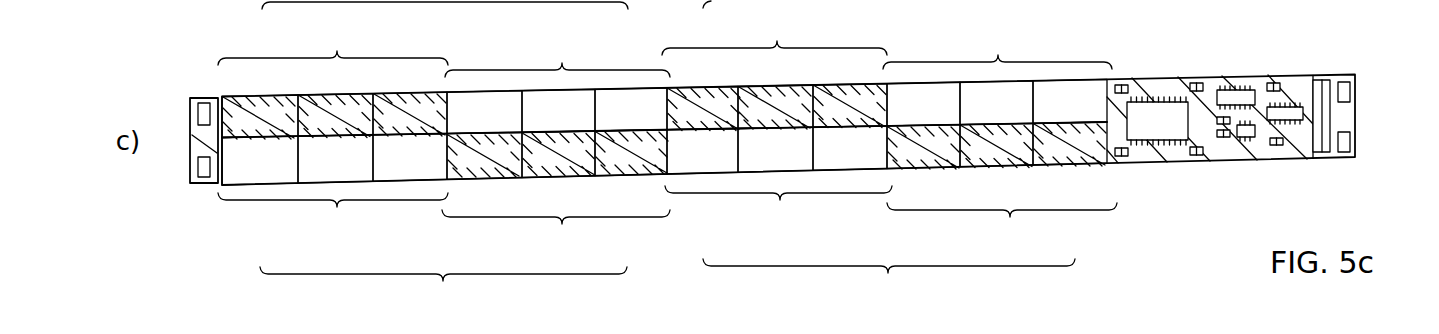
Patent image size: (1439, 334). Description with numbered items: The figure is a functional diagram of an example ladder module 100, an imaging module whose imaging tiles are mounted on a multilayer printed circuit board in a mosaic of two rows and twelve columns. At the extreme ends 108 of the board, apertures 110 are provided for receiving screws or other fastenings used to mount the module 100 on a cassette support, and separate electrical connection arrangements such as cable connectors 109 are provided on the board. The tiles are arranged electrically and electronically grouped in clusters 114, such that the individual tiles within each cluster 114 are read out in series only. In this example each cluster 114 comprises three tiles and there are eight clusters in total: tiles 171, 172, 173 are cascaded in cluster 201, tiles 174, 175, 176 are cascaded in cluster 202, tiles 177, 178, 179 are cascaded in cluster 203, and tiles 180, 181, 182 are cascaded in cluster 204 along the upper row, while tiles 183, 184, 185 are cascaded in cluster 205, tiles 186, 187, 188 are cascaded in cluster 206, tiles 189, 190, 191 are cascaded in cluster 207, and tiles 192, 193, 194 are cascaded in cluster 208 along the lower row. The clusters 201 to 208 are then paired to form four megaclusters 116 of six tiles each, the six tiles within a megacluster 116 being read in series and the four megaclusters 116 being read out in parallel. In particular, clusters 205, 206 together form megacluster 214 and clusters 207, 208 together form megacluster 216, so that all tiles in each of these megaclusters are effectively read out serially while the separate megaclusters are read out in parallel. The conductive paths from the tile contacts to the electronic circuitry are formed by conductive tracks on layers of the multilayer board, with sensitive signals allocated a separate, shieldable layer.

The ladder module 100 is at (1355, 120).
The extreme ends 108 is at (200, 136).
The cable connectors 109 is at (1313, 88).
The apertures 110 is at (197, 117).
The cluster 114 is at (300, 32).
The megacluster 116 is at (393, 303).
The tile 171 is at (260, 117).
The tile 172 is at (335, 116).
The tile 173 is at (410, 114).
The tile 174 is at (484, 112).
The tile 175 is at (558, 110).
The tile 176 is at (631, 109).
The tile 177 is at (703, 109).
The tile 178 is at (775, 107).
The tile 179 is at (850, 106).
The tile 180 is at (923, 104).
The tile 181 is at (996, 103).
The tile 182 is at (1070, 101).
The tile 183 is at (260, 160).
The tile 184 is at (335, 159).
The tile 185 is at (410, 158).
The tile 186 is at (484, 155).
The tile 187 is at (558, 154).
The tile 188 is at (631, 153).
The tile 189 is at (702, 152).
The tile 190 is at (775, 149).
The tile 191 is at (850, 148).
The tile 192 is at (923, 147).
The tile 193 is at (996, 145).
The tile 194 is at (1070, 144).
The cluster 201 is at (333, 40).
The cluster 202 is at (557, 51).
The cluster 203 is at (774, 31).
The cluster 204 is at (997, 43).
The cluster 205 is at (333, 222).
The cluster 206 is at (556, 237).
The cluster 207 is at (778, 215).
The cluster 208 is at (1002, 229).
The megacluster 214 is at (443, 295).
The megacluster 216 is at (889, 285).